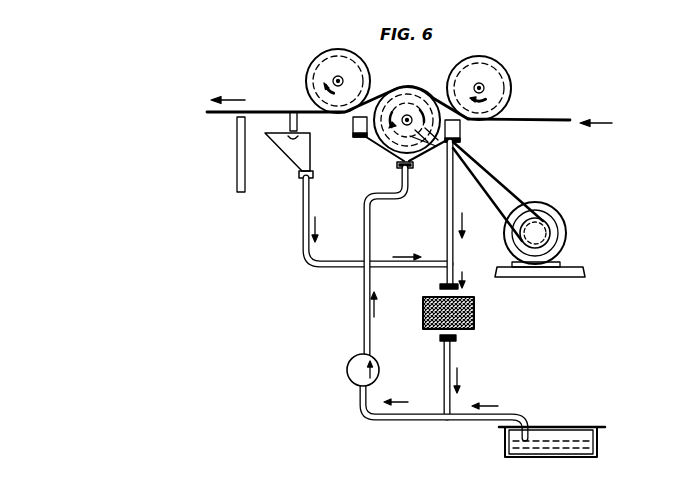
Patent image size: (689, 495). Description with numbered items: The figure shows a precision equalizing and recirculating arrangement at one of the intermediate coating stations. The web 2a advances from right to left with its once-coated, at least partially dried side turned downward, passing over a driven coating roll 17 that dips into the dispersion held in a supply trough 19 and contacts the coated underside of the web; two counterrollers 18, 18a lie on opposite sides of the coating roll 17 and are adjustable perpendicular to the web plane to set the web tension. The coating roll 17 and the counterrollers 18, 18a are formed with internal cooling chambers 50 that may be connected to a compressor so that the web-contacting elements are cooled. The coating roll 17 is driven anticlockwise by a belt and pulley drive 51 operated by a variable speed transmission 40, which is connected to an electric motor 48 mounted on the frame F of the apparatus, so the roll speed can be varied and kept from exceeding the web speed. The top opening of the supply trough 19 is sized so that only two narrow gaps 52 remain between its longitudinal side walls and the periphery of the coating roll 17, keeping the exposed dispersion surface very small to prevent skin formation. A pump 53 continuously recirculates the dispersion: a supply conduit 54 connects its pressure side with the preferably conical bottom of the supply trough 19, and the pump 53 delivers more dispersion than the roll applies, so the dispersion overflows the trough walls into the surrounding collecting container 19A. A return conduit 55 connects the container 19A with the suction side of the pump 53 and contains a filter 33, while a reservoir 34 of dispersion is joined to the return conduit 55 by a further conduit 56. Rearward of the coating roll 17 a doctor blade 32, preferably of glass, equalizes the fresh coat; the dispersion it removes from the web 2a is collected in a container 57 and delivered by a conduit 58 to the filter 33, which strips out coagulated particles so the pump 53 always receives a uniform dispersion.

The web 2a is at (556, 120).
The counterroller 18a is at (309, 65).
The counterroller 18 is at (506, 71).
The supply trough 19 is at (383, 150).
The internal cooling chambers 50 is at (363, 79).
The gaps 52 is at (445, 116).
The collecting container 19A is at (356, 137).
The coating roll 17 is at (413, 165).
The doctor blade 32 is at (293, 110).
The container 57 is at (280, 140).
The conduit 58 is at (337, 268).
The supply conduit 54 is at (371, 228).
The return conduit 55 is at (454, 246).
The conduit 56 is at (505, 416).
The filter 33 is at (475, 314).
The pump 53 is at (359, 383).
The reservoir 34 is at (598, 445).
The belt and pulley drive 51 is at (494, 177).
The electric motor 48 is at (565, 243).
The variable speed transmission 40 is at (552, 222).
The frame F is at (571, 278).